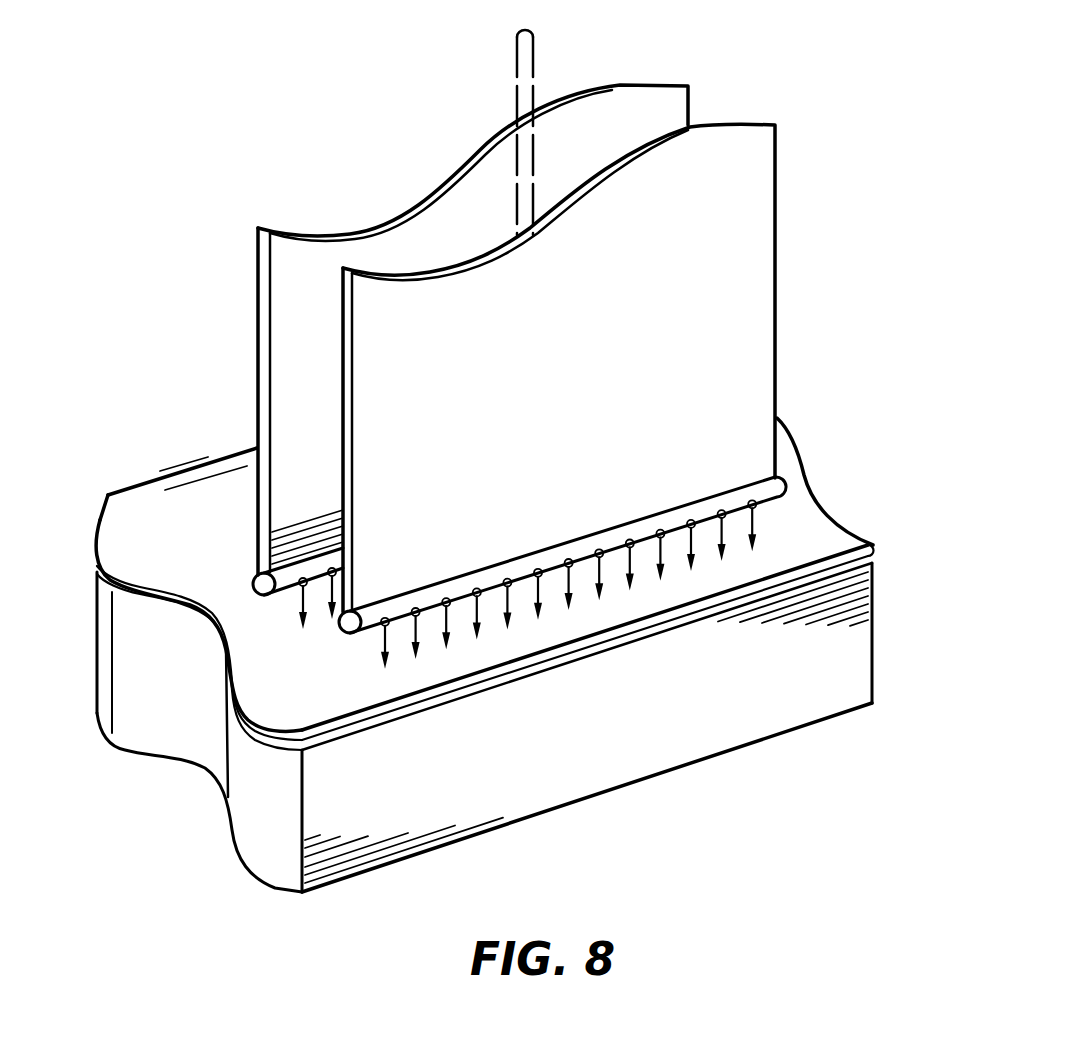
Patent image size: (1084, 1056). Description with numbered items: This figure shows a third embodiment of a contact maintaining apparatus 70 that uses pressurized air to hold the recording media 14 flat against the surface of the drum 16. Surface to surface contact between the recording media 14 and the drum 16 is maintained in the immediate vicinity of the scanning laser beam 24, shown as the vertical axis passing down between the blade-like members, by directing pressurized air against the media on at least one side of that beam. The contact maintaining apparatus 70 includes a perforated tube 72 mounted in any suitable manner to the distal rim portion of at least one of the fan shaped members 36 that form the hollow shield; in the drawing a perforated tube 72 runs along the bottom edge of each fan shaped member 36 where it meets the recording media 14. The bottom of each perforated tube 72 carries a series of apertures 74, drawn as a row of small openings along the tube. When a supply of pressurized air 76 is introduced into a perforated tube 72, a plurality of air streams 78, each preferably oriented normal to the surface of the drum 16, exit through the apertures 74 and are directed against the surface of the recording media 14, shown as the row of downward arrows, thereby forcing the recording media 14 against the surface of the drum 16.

The recording media 14 is at (797, 540).
The drum 16 is at (825, 655).
The scanning laser beam 24 is at (522, 92).
The fan shaped members 36 is at (570, 331).
The contact maintaining apparatus 70 is at (150, 333).
The perforated tube 72 is at (253, 591).
The apertures 74 is at (601, 540).
The supply of pressurized air 76 is at (800, 476).
The air streams 78 is at (518, 586).